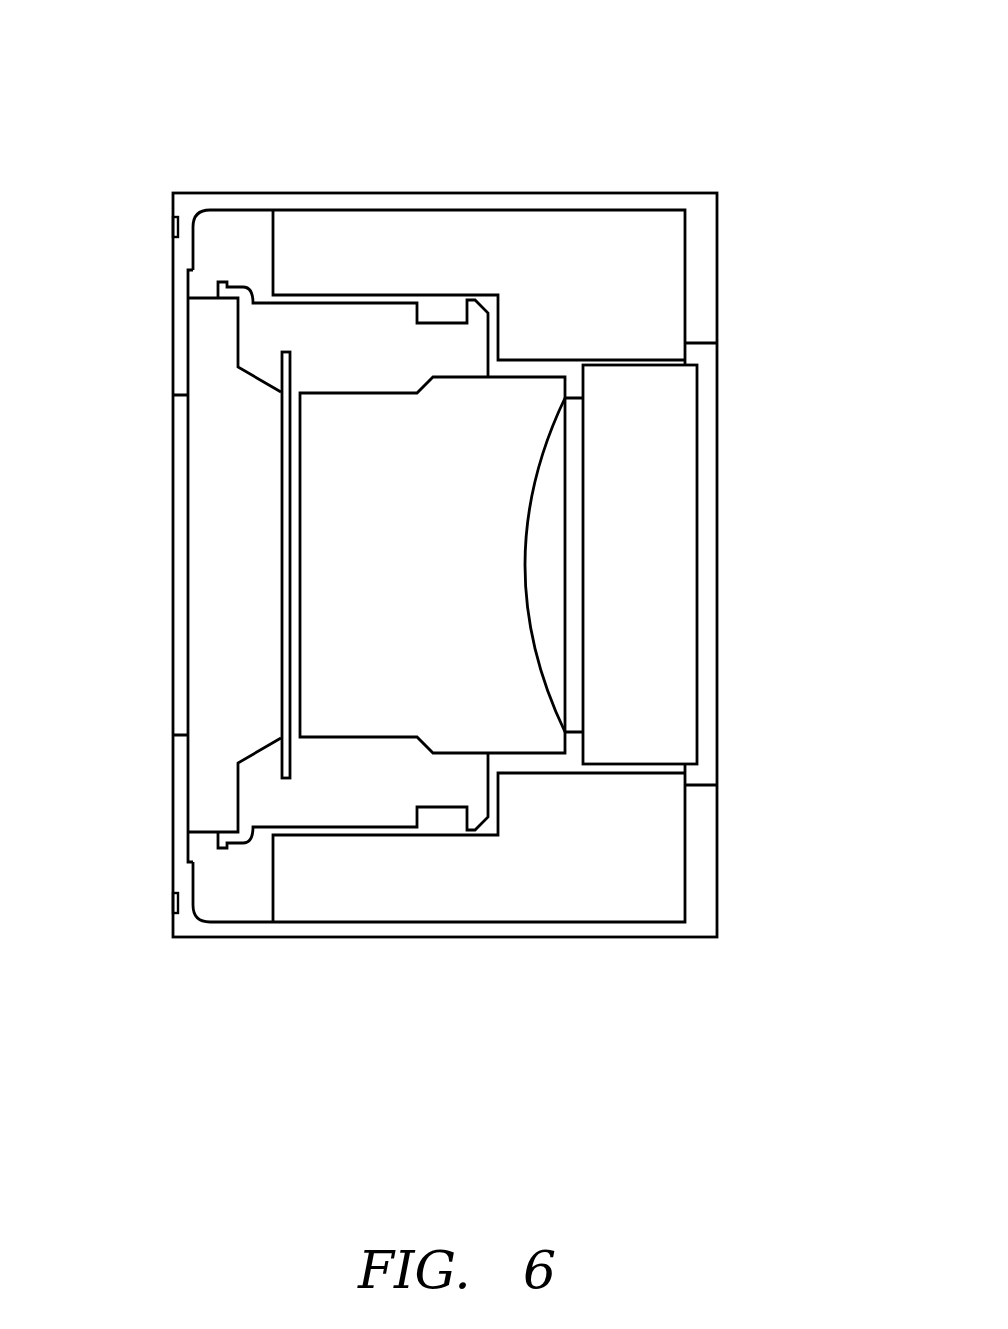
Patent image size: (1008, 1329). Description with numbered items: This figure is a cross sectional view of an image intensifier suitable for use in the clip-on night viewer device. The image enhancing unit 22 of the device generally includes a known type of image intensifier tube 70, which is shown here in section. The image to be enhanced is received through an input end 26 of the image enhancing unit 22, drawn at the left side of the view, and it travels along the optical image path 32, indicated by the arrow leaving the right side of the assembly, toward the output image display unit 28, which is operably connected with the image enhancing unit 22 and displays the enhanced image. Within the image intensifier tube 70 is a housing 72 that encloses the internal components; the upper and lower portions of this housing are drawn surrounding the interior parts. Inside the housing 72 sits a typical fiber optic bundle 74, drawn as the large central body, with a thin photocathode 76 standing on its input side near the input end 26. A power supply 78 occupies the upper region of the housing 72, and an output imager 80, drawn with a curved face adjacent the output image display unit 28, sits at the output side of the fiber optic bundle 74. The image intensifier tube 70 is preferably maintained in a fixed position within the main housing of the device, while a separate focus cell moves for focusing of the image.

The image enhancing unit 22 is at (422, 120).
The input end 26 is at (147, 218).
The output image display unit 28 is at (730, 355).
The optical image path 32 is at (743, 563).
The image intensifier tube 70 is at (453, 952).
The housing 72 is at (602, 928).
The fiber optic bundle 74 is at (428, 600).
The photocathode 76 is at (295, 760).
The power supply 78 is at (583, 282).
The output imager 80 is at (538, 653).